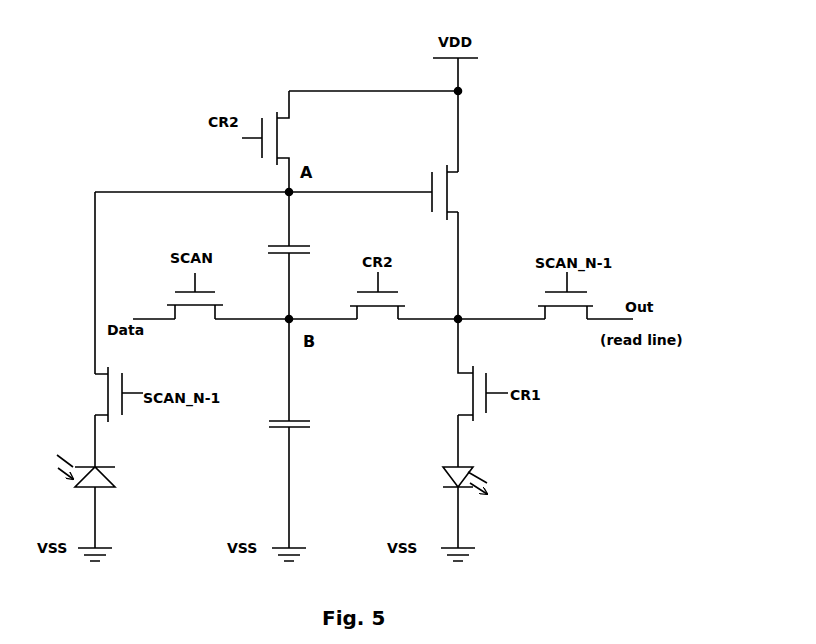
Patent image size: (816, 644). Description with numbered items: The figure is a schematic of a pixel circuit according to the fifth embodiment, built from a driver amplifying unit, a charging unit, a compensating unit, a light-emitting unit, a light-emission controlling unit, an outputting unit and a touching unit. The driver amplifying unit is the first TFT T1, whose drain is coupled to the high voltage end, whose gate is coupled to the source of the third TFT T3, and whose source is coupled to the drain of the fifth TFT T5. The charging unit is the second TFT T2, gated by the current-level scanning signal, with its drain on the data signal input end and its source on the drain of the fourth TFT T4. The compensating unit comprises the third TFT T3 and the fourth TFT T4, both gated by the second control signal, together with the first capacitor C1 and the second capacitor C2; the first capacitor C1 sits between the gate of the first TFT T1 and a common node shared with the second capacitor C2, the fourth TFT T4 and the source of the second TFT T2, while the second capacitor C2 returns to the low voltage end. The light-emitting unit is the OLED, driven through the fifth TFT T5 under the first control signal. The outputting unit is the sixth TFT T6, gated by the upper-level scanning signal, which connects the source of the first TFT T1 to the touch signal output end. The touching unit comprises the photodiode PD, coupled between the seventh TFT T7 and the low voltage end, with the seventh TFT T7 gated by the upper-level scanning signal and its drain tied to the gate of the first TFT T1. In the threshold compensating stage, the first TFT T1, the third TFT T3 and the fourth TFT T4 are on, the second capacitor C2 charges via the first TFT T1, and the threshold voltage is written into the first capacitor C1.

The first TFT T1 is at (457, 242).
The second TFT T2 is at (195, 309).
The third TFT T3 is at (279, 141).
The fourth TFT T4 is at (377, 310).
The fifth TFT T5 is at (468, 393).
The sixth TFT T6 is at (565, 310).
The seventh TFT T7 is at (105, 417).
The first capacitor C1 is at (297, 255).
The second capacitor C2 is at (303, 433).
The photodiode PD is at (104, 501).
The element OLED is at (489, 507).